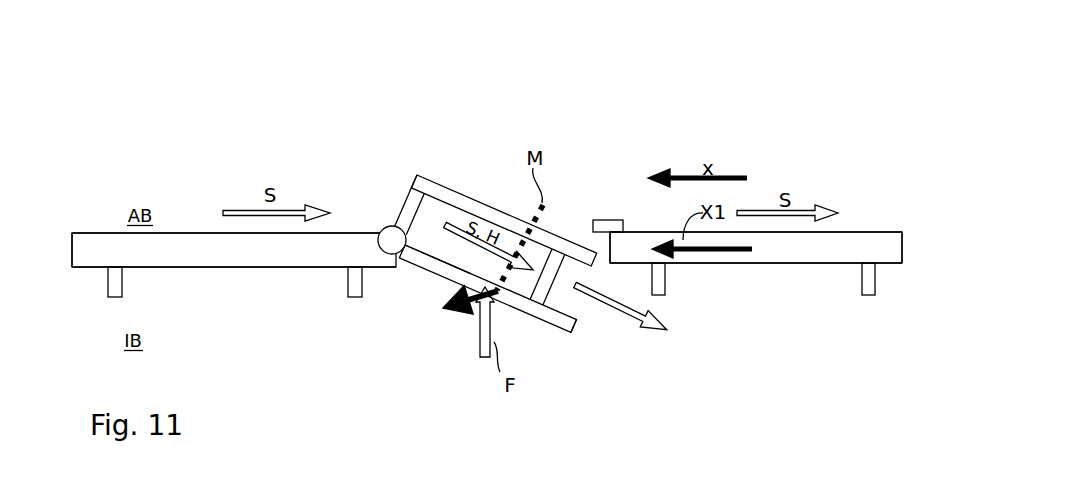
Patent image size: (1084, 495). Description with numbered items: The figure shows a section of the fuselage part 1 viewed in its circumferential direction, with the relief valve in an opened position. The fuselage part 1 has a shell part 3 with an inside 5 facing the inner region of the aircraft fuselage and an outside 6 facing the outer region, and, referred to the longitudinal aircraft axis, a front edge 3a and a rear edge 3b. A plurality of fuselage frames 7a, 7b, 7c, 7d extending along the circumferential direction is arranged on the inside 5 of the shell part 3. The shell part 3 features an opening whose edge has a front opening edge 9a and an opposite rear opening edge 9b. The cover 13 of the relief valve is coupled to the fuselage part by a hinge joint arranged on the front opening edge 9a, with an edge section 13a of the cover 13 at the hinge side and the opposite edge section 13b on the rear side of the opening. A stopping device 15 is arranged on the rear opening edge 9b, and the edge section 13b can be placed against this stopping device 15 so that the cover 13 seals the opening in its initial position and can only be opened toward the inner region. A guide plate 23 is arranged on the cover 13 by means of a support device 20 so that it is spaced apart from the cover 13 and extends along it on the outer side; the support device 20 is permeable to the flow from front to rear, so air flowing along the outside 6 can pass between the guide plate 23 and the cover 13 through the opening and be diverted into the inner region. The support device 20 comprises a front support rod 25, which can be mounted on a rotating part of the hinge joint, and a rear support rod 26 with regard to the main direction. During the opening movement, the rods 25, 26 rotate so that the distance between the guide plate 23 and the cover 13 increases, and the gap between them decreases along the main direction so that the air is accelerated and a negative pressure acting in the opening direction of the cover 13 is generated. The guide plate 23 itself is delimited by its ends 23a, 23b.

The fuselage part 1 is at (641, 156).
The shell part 3 is at (197, 253).
The front edge 3a is at (72, 250).
The rear edge 3b is at (903, 255).
The inside 5 is at (248, 268).
The outside 6 is at (78, 232).
The fuselage frame 7a is at (122, 288).
The fuselage frame 7b is at (350, 286).
The fuselage frame 7c is at (665, 286).
The fuselage frame 7d is at (870, 288).
The front opening edge 9a is at (408, 256).
The rear opening edge 9b is at (605, 247).
The cover 13 is at (487, 309).
The edge section of the cover 13a is at (470, 273).
The edge section of the cover 13b is at (565, 333).
The stopping device 15 is at (609, 222).
The support device 20 is at (466, 237).
The guide plate 23 is at (485, 203).
The upper rail first end 23a is at (421, 177).
The upper rail second end 23b is at (580, 251).
The front support rod 25 is at (400, 209).
The rear support rod 26 is at (621, 307).